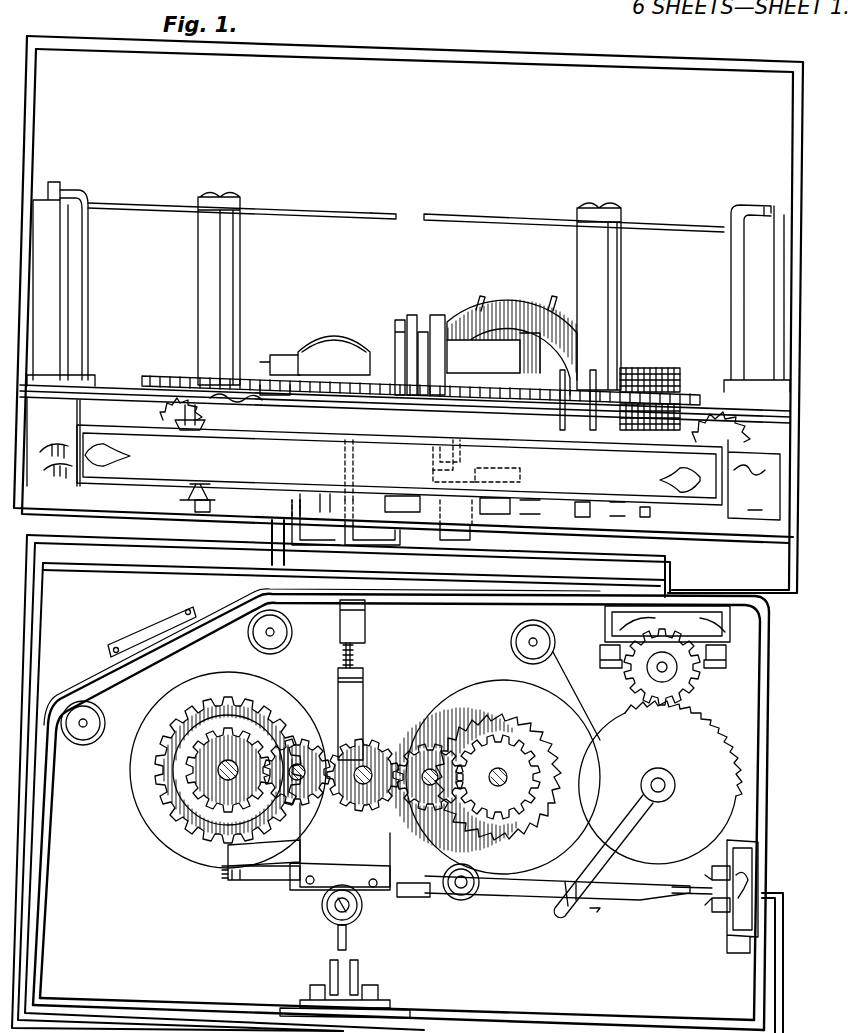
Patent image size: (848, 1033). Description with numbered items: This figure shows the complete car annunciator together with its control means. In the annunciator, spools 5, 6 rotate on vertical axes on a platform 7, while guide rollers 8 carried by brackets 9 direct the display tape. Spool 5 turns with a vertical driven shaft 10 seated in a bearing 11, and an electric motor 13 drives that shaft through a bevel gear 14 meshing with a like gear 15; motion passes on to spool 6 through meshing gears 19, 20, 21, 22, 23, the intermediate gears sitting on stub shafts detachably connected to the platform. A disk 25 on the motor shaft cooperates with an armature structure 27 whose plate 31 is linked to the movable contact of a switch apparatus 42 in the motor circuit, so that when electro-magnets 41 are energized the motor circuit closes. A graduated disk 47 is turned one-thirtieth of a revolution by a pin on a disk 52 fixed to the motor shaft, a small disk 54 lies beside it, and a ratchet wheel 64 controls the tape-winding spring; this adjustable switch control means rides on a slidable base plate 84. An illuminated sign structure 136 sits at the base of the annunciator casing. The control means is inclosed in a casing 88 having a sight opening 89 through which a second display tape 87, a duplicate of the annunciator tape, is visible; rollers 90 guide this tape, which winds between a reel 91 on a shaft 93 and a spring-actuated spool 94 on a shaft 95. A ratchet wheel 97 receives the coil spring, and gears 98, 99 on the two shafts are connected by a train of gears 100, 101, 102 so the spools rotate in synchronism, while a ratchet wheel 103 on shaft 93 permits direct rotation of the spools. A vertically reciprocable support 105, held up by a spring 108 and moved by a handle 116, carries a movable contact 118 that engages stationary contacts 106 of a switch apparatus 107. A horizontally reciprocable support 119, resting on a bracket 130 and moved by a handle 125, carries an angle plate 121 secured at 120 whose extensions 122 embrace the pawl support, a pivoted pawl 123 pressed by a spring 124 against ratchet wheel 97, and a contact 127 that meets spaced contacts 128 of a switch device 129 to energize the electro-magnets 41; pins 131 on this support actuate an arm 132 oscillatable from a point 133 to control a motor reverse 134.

The spool 5 is at (268, 217).
The spool 6 is at (634, 235).
The platform 7 is at (688, 412).
The guide rollers 8 is at (55, 258).
The brackets 9 is at (735, 268).
The driven shaft 10 is at (185, 493).
The bearing 11 is at (205, 516).
The electric motor 13 is at (305, 340).
The bevel gear 14 is at (175, 422).
The bevel gear 15 is at (200, 420).
The gear 19 is at (173, 378).
The intermediate gear 20 is at (300, 380).
The intermediate gear 21 is at (395, 350).
The intermediate gear 22 is at (508, 330).
The gear 23 is at (621, 378).
The disk 25 is at (437, 330).
The armature structure 27 is at (484, 300).
The plate 31 is at (445, 338).
The electro-magnets 41 is at (645, 375).
The switch apparatus 42 is at (505, 470).
The graduated disk 47 is at (527, 312).
The disk 52 is at (420, 330).
The small disk 54 is at (632, 471).
The ratchet wheel 64 is at (736, 466).
The base plate 84 is at (632, 520).
The second display tape 87 is at (132, 785).
The casing 88 is at (105, 1005).
The sight opening 89 is at (122, 645).
The rollers 90 is at (80, 737).
The reel 91 is at (482, 692).
The shaft 93 is at (520, 752).
The spool 94 is at (235, 755).
The shaft 95 is at (290, 745).
The ratchet wheel 97 is at (226, 691).
The gear 98 is at (205, 768).
The gear 99 is at (480, 762).
The gear 100 is at (440, 715).
The gear 101 is at (360, 760).
The gear 102 is at (455, 730).
The ratchet wheel 103 is at (497, 854).
The vertically reciprocable support 105 is at (360, 695).
The stationary contacts 106 is at (360, 970).
The switch apparatus 107 is at (395, 1000).
The spring 108 is at (362, 660).
The handle 116 is at (330, 915).
The movable contact 118 is at (348, 940).
The horizontally reciprocable support 119 is at (528, 884).
The securing point 120 is at (312, 884).
The angle plate 121 is at (345, 845).
The extensions 122 is at (412, 859).
The pivoted pawl 123 is at (270, 870).
The spring 124 is at (232, 875).
The handle 125 is at (462, 895).
The contact 127 is at (668, 896).
The spaced contacts 128 is at (702, 900).
The switch device 129 is at (740, 950).
The bracket 130 is at (410, 898).
The pins 131 is at (575, 896).
The arm 132 is at (622, 832).
The pivot point 133 is at (666, 785).
The motor reverse 134 is at (705, 705).
The illuminated sign structure 136 is at (670, 485).